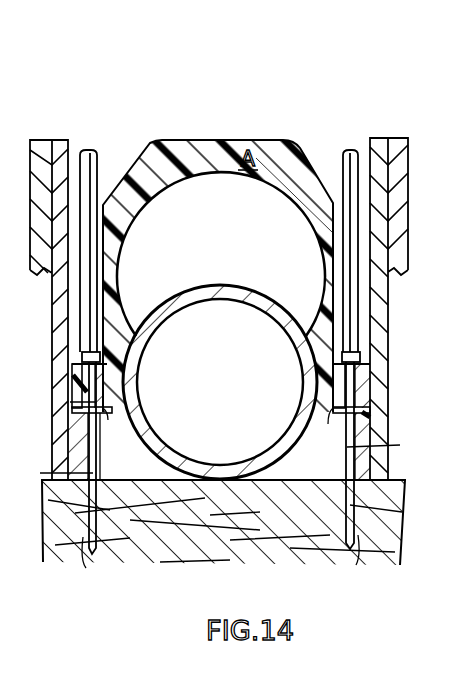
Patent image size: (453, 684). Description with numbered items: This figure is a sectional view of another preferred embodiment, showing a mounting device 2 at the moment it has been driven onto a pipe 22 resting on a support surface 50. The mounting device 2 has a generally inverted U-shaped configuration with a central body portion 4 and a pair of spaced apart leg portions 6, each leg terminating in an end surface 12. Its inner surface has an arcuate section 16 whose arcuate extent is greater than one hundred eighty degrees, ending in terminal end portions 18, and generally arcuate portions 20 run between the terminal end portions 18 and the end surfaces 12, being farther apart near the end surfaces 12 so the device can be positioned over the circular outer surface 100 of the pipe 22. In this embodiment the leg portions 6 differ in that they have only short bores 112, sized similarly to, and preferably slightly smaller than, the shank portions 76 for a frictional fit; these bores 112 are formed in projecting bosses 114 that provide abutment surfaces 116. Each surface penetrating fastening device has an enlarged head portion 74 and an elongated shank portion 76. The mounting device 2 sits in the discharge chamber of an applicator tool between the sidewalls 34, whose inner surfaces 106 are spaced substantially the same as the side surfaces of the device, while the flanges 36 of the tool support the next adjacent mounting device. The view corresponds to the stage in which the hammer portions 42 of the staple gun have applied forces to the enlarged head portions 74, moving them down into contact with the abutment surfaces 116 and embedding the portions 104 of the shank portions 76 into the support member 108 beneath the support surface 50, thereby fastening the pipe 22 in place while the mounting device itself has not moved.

The mounting device 2 is at (243, 110).
The central body portion 4 is at (168, 142).
The leg portions 6 is at (120, 250).
The end surface 12 is at (64, 402).
The arcuate section 16 is at (214, 175).
The terminal end portions 18 is at (140, 324).
The generally arcuate portions 20 is at (112, 418).
The pipe 22 is at (296, 421).
The sidewall 34 is at (58, 301).
The flange 36 is at (55, 441).
The hammer portions 42 is at (96, 152).
The support surface 50 is at (307, 482).
The enlarged head portion 74 is at (80, 353).
The shank portion 76 is at (40, 473).
The circular outer surface 100 is at (218, 481).
The portion of the shank portion 104 is at (92, 558).
The inner surfaces 106 is at (70, 142).
The support member 108 is at (229, 487).
The short bores 112 is at (72, 373).
The projecting bosses 114 is at (72, 395).
The abutment surfaces 116 is at (76, 363).